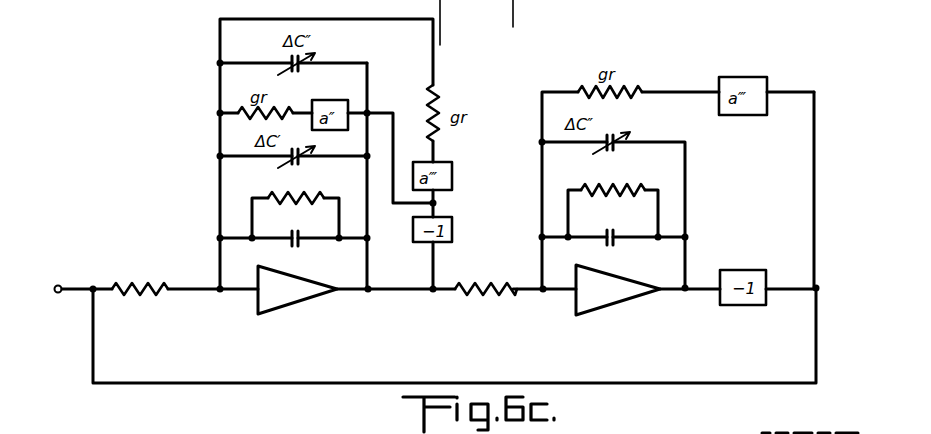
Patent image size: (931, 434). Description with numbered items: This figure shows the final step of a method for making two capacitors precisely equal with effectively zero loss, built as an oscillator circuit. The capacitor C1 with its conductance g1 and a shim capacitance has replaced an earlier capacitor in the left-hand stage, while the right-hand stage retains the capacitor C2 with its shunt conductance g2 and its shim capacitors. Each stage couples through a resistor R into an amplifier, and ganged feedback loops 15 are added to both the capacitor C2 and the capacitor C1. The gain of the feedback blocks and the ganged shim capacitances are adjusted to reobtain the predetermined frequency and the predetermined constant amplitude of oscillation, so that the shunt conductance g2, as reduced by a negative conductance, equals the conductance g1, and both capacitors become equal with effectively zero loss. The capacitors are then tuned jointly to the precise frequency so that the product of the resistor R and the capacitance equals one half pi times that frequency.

The ganged feedback loops 15 is at (452, 94).
The resistor R is at (314, 302).
The shunt conductance g2 is at (296, 189).
The capacitor C2 is at (307, 249).
The conductance g1 is at (613, 178).
The capacitor C1 is at (613, 229).